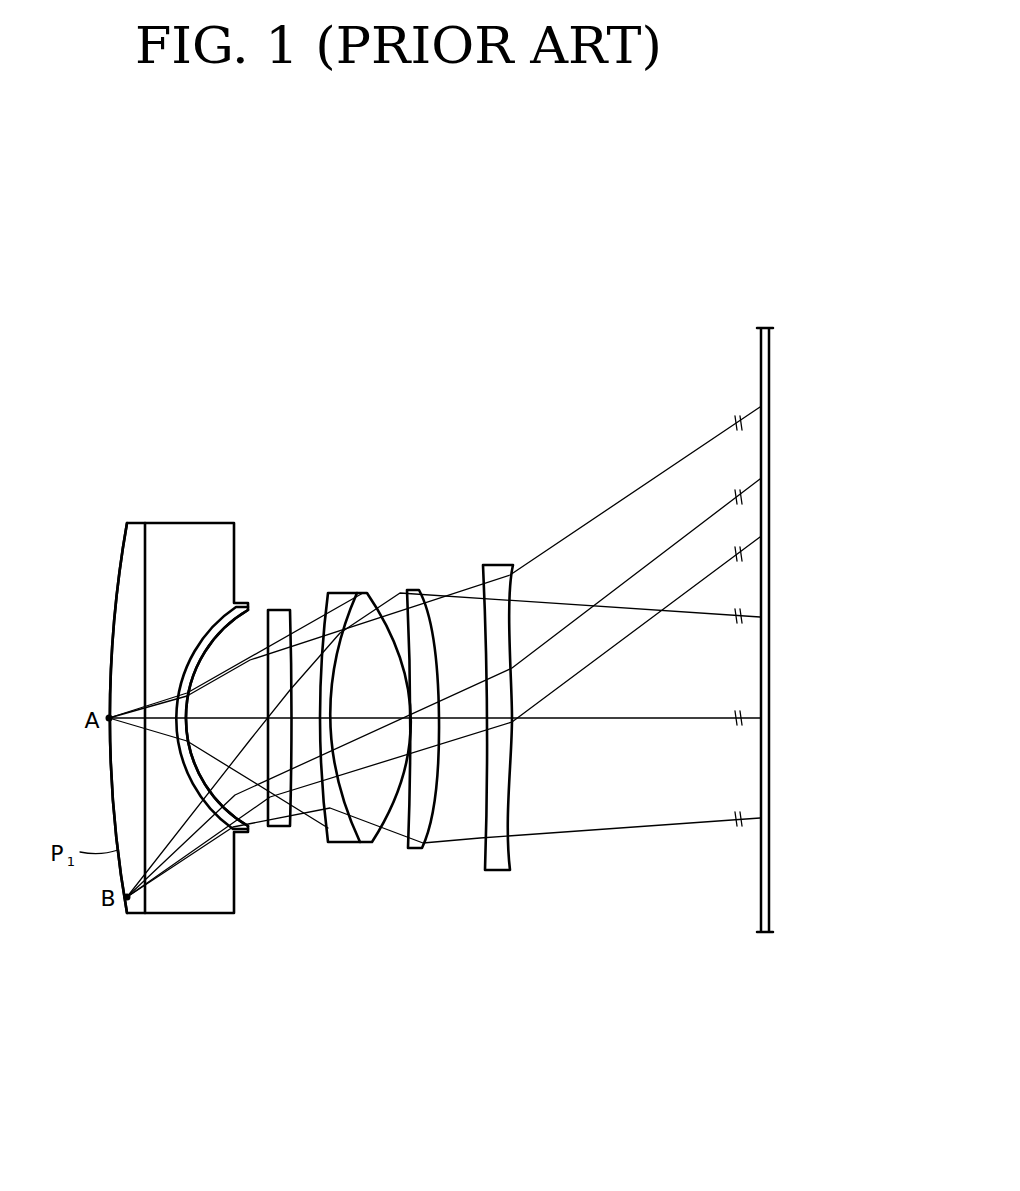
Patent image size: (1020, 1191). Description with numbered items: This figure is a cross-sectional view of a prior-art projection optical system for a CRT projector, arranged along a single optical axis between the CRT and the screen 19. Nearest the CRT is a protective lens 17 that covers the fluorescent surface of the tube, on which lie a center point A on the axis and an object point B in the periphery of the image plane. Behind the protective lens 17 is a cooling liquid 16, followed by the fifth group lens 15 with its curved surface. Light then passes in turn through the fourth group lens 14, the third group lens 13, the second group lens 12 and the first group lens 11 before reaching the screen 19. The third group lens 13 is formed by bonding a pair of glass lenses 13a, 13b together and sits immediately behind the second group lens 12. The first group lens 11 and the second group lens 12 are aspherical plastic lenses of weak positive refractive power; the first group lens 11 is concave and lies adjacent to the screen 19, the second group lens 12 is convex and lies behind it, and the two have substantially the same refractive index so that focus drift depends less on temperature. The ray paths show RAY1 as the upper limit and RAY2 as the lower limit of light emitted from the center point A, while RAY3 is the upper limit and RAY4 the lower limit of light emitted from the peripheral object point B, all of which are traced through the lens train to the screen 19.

The first group lens 11 is at (496, 570).
The second group lens 12 is at (423, 617).
The third group lens 13 is at (351, 774).
The glass lens 13a is at (330, 842).
The glass lens 13b is at (362, 842).
The fourth group lens 14 is at (282, 612).
The fifth group lens 15 is at (187, 670).
The cooling liquid 16 is at (203, 530).
The protective lens 17 is at (128, 597).
The screen 19 is at (760, 905).
The upper limit ray RAY1 is at (558, 605).
The lower limit ray RAY2 is at (590, 828).
The upper limit ray RAY3 is at (608, 510).
The lower limit ray RAY4 is at (616, 648).